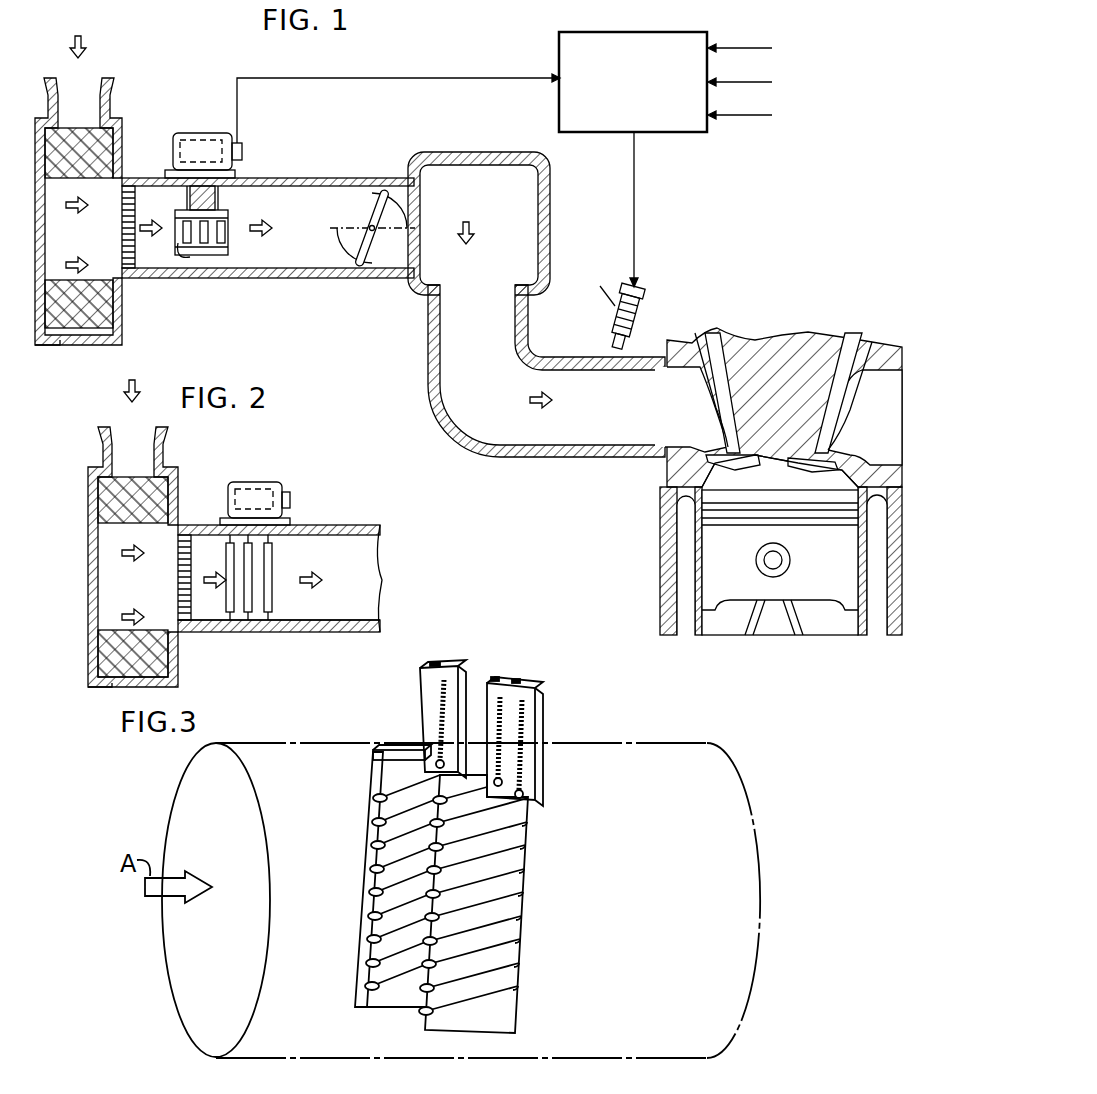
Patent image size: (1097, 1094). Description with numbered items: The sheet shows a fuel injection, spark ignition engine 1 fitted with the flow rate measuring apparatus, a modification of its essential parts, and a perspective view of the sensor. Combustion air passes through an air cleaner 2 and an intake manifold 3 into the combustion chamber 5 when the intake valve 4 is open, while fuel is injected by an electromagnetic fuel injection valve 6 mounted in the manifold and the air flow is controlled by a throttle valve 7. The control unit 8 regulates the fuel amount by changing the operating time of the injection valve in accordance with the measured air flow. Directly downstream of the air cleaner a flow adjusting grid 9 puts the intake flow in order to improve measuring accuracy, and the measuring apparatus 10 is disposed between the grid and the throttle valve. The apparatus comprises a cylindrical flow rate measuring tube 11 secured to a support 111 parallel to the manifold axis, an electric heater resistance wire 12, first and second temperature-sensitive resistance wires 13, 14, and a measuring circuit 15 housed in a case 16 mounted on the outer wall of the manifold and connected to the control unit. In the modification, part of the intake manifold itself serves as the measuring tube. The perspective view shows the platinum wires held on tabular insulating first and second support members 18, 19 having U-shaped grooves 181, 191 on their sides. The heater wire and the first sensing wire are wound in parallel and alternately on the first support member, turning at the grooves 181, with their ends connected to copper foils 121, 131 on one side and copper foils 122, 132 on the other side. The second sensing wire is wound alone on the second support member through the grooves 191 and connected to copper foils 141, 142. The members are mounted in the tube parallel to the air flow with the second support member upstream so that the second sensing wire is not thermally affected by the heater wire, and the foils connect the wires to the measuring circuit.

In FIG. 1, the engine 1 is at (656, 558).
In FIG. 1, the air cleaner 2 is at (33, 320).
In FIG. 2, the air cleaner 2 is at (88, 665).
In FIG. 1, the intake manifold 3 is at (320, 278).
In FIG. 2, the intake manifold 3 is at (382, 524).
In FIG. 1, the intake valve 4 is at (718, 452).
In FIG. 1, the combustion chamber 5 is at (778, 488).
In FIG. 1, the electromagnetic fuel injection valve 6 is at (605, 330).
In FIG. 1, the throttle valve 7 is at (372, 270).
In FIG. 1, the control unit 8 is at (558, 45).
In FIG. 1, the flow adjusting grid 9 is at (142, 180).
In FIG. 2, the flow adjusting grid 9 is at (200, 527).
In FIG. 1, the flow rate measuring apparatus 10 is at (210, 260).
In FIG. 2, the flow rate measuring apparatus 10 is at (283, 578).
In FIG. 1, the flow rate measuring tube 11 is at (228, 212).
In FIG. 2, the flow rate measuring tube 11 is at (318, 633).
In FIG. 3, the flow rate measuring tube 11 is at (640, 1058).
In FIG. 1, the electric heater resistance wire 12 is at (203, 257).
In FIG. 2, the electric heater resistance wire 12 is at (250, 614).
In FIG. 3, the electric heater resistance wire 12 is at (503, 802).
In FIG. 1, the first temperature-sensitive resistance wire 13 is at (226, 255).
In FIG. 2, the first temperature-sensitive resistance wire 13 is at (270, 614).
In FIG. 3, the first temperature-sensitive resistance wire 13 is at (508, 833).
In FIG. 1, the second temperature-sensitive resistance wire 14 is at (180, 248).
In FIG. 2, the second temperature-sensitive resistance wire 14 is at (232, 614).
In FIG. 3, the second temperature-sensitive resistance wire 14 is at (395, 778).
In FIG. 1, the measuring circuit 15 is at (172, 138).
In FIG. 2, the measuring circuit 15 is at (228, 485).
In FIG. 1, the case 16 is at (200, 133).
In FIG. 3, the first support member 18 is at (512, 1036).
In FIG. 3, the second support member 19 is at (380, 1010).
In FIG. 1, the support 111 is at (225, 195).
In FIG. 3, the copper foil 121 is at (537, 708).
In FIG. 3, the copper foil 122 is at (516, 679).
In FIG. 3, the copper foil 131 is at (503, 733).
In FIG. 3, the copper foil 132 is at (494, 677).
In FIG. 3, the copper foil 141 is at (442, 703).
In FIG. 3, the copper foil 142 is at (435, 662).
In FIG. 3, the grooves 181 is at (430, 912).
In FIG. 3, the grooves 191 is at (372, 798).